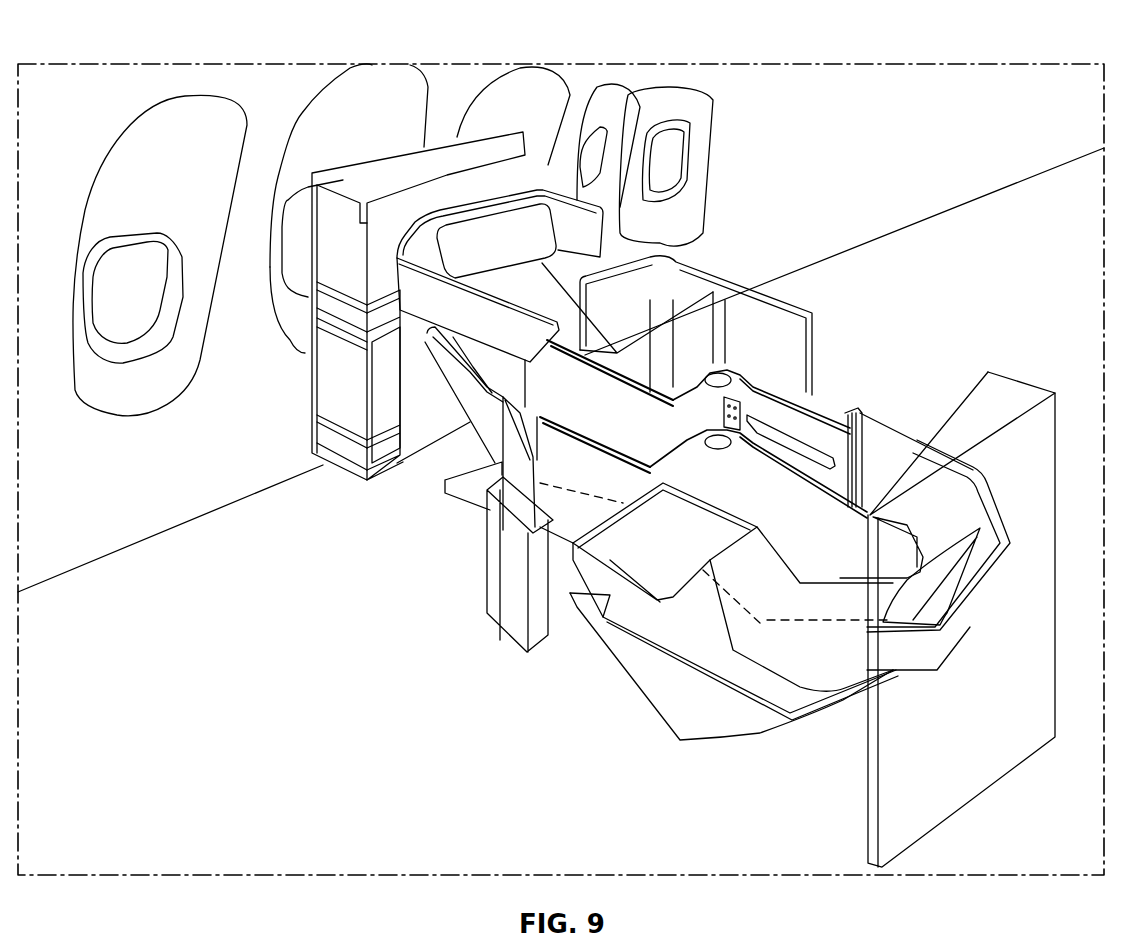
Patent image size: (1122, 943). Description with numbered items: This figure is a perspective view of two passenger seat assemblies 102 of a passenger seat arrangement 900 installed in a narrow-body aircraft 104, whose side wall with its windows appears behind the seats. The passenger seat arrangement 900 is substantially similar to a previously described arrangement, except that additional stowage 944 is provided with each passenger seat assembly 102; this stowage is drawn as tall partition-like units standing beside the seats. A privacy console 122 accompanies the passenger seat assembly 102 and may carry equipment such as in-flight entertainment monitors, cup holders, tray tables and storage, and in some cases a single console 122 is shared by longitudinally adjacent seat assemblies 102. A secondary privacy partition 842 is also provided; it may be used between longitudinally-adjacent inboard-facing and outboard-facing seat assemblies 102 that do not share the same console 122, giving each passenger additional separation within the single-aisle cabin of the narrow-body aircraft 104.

The passenger seat arrangement 900 is at (138, 44).
The narrow-body aircraft 104 is at (473, 97).
The additional stowage 944 is at (350, 187).
The passenger seat assembly 102 is at (548, 308).
The privacy console 122 is at (847, 413).
The secondary privacy partition 842 is at (527, 610).